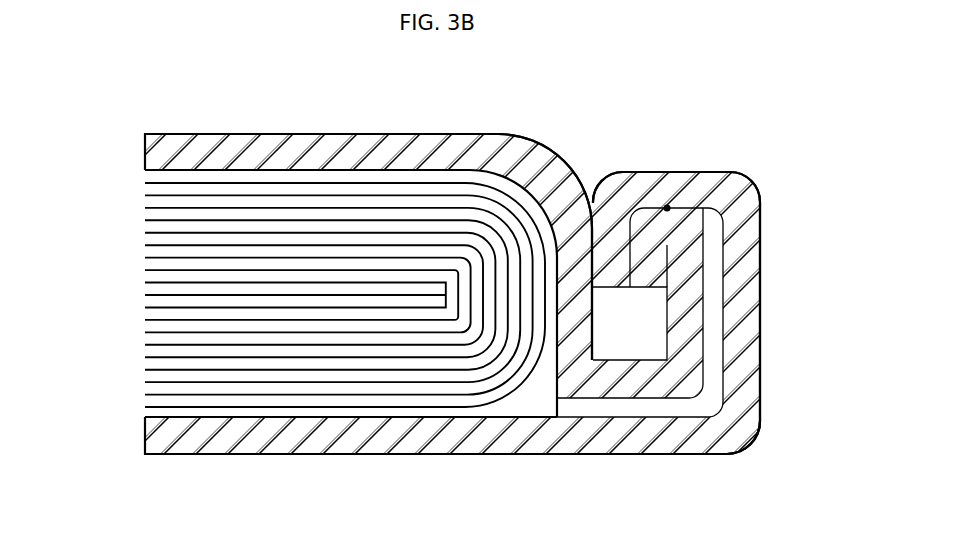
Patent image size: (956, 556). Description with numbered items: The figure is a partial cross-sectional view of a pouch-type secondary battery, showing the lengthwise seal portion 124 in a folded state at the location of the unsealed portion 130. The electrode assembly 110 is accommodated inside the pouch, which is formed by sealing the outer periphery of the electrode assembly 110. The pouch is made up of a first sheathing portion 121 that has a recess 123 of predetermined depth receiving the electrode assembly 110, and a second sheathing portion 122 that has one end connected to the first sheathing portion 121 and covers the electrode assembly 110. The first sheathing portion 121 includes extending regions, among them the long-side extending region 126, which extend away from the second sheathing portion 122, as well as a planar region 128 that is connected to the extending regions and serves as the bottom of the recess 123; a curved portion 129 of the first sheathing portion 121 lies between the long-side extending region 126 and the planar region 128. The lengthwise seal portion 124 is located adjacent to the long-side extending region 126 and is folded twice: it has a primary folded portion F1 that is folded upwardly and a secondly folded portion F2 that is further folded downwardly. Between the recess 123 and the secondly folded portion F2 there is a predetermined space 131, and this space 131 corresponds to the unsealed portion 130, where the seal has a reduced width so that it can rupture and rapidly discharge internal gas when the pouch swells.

The electrode assembly 110 is at (130, 289).
The first sheathing portion 121 is at (140, 127).
The second sheathing portion 122 is at (348, 447).
The recess 123 is at (538, 398).
The lengthwise seal portion 124 is at (666, 204).
The long-side extending region 126 is at (580, 343).
The planar region 128 is at (315, 143).
The curved portion 129 is at (545, 177).
The unsealed portion 130 is at (735, 350).
The space 131 is at (642, 408).
The primary folded portion F1 is at (762, 460).
The secondly folded portion F2 is at (697, 162).